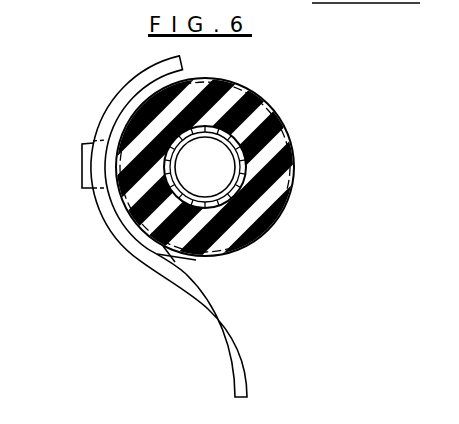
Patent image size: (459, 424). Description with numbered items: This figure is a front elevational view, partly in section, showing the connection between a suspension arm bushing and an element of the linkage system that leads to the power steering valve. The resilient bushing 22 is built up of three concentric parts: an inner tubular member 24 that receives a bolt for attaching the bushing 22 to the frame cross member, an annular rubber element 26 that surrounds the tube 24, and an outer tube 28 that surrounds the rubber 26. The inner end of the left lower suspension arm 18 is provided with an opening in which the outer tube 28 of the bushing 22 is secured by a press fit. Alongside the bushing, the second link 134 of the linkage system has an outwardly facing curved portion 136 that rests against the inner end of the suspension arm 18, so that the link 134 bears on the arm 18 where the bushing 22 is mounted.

The resilient bushing 22 is at (217, 168).
The annular rubber element 26 is at (243, 103).
The outer tube 28 is at (304, 160).
The inner tubular member 24 is at (276, 185).
The left lower suspension arm 18 is at (160, 254).
The second link 134 is at (253, 344).
The outwardly facing curved portion 136 is at (101, 128).